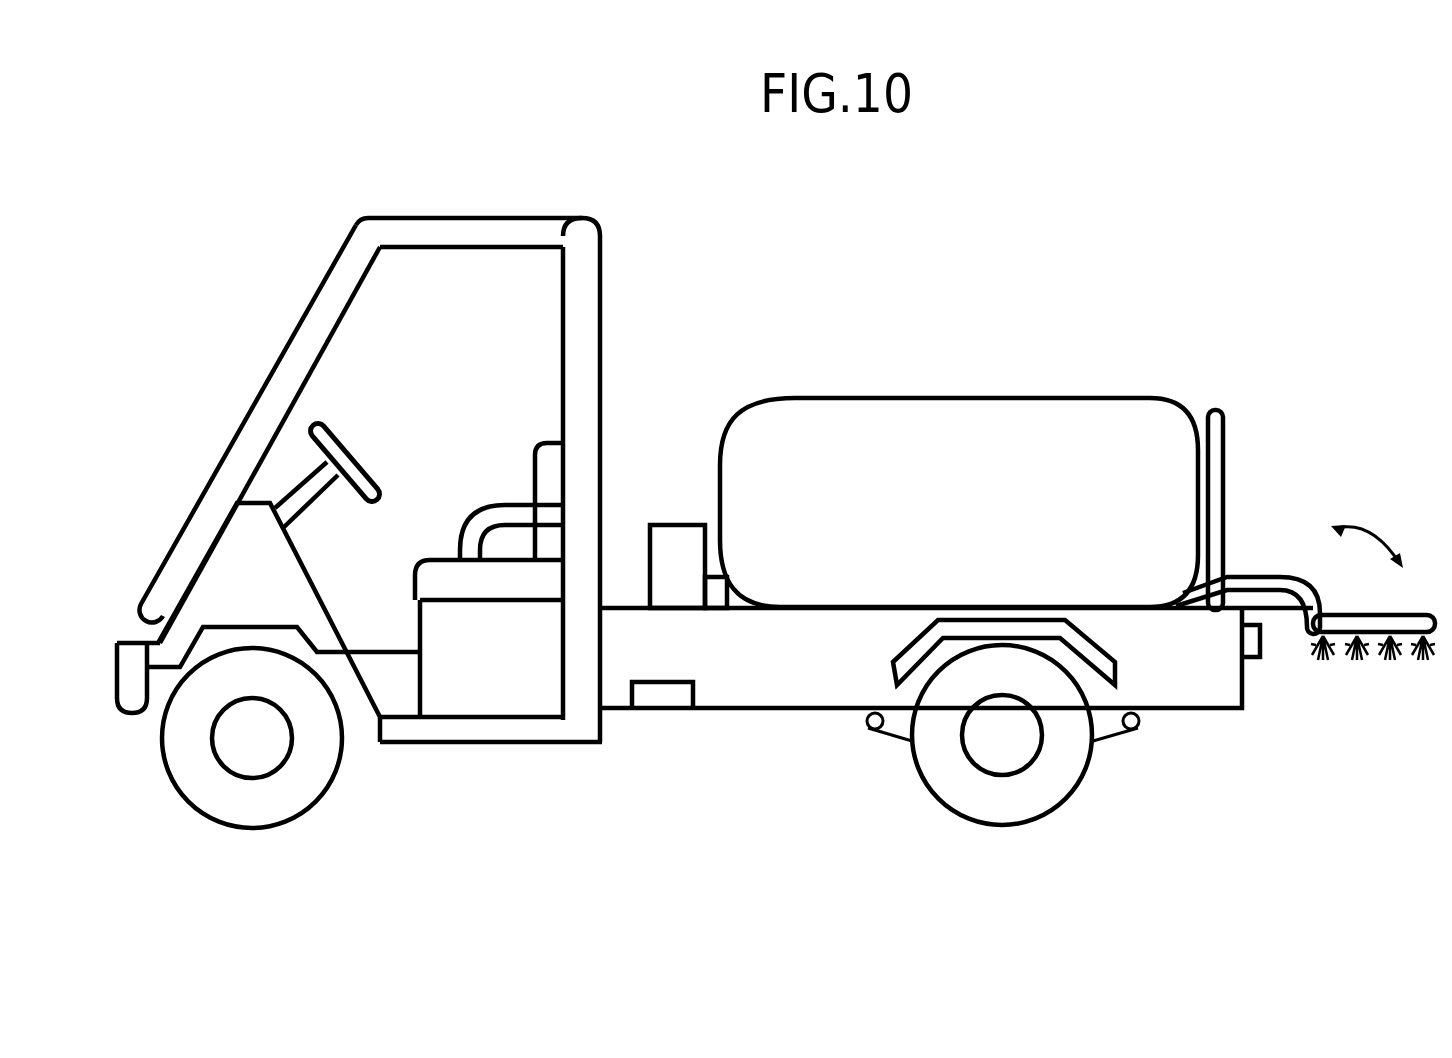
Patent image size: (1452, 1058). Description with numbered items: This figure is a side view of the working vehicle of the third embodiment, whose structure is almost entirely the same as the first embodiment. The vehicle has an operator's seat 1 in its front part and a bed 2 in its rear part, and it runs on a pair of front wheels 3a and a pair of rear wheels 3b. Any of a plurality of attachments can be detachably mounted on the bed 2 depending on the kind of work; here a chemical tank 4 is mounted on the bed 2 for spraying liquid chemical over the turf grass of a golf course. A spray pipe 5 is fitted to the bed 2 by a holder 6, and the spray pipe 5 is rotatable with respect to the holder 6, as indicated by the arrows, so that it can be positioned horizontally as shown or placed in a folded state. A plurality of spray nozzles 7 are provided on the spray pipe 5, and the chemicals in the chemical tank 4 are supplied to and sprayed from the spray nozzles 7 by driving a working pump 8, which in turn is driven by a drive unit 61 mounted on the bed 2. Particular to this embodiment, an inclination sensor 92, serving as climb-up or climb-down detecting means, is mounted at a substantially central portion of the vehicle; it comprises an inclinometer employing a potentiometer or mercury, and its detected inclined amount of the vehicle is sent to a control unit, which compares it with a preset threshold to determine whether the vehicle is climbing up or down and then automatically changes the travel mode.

The operator's seat 1 is at (543, 305).
The bed 2 is at (728, 688).
The front wheels 3a is at (271, 800).
The rear wheels 3b is at (1013, 803).
The chemical tank 4 is at (975, 430).
The spray pipe 5 is at (1395, 620).
The holder 6 is at (1280, 613).
The spray nozzles 7 is at (1405, 662).
The working pump 8 is at (720, 587).
The drive unit 61 is at (670, 548).
The inclination sensor 92 is at (653, 698).